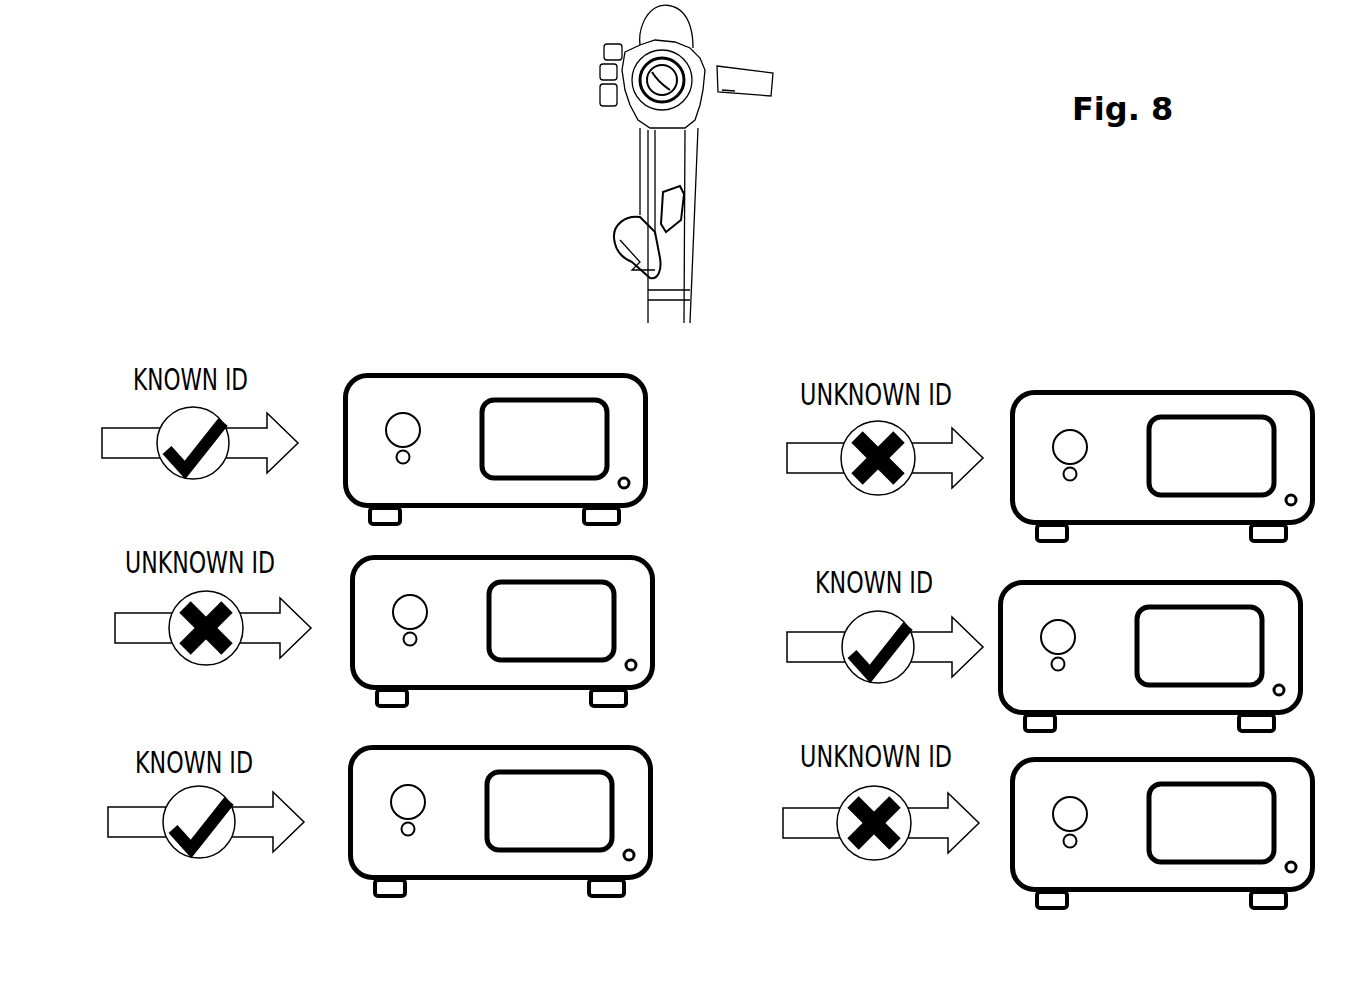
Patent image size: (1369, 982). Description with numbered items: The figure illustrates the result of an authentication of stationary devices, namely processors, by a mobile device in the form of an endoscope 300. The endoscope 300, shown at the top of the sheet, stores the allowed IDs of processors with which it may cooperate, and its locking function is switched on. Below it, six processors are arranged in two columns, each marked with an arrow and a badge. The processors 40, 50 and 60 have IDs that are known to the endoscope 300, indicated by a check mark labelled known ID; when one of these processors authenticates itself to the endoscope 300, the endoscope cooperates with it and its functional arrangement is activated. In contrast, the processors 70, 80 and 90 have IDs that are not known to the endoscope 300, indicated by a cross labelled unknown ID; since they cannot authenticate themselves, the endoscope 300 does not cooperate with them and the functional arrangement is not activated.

The endoscope 300 is at (705, 228).
The processor 40 is at (647, 495).
The processor 50 is at (655, 822).
The processor 60 is at (1307, 695).
The processor 70 is at (657, 630).
The processor 80 is at (1316, 503).
The processor 90 is at (1315, 880).